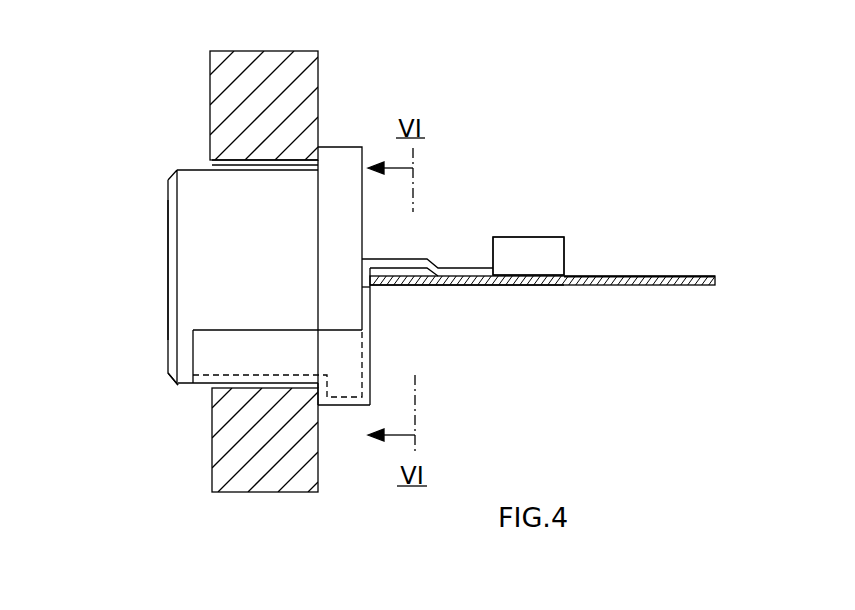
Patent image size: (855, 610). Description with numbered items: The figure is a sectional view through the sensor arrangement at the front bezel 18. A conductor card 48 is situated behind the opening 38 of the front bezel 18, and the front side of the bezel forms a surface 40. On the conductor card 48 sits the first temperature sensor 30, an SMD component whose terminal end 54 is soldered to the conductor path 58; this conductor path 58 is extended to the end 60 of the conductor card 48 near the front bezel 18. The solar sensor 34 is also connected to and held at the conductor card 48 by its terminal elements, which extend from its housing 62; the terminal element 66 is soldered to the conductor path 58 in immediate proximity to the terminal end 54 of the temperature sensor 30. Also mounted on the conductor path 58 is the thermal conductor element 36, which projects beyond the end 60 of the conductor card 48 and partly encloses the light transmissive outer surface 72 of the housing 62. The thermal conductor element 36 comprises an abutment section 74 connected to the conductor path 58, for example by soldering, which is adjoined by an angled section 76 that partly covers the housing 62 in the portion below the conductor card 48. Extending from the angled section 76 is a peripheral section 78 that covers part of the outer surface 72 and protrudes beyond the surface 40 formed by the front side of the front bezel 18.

The front bezel 18 is at (233, 92).
The surface 40 is at (208, 122).
The opening 38 is at (213, 162).
The housing 62 is at (195, 255).
The solar sensor 34 is at (163, 312).
The light transmissive outer surface 72 is at (192, 400).
The peripheral section 78 is at (303, 357).
The angled section 76 is at (367, 373).
The end 60 is at (380, 298).
The thermal conductor element 36 is at (378, 273).
The terminal element 66 is at (408, 262).
The first temperature sensor 30 is at (550, 226).
The terminal end 54 is at (547, 255).
The conductor path 58 is at (662, 275).
The abutment section 74 is at (417, 287).
The conductor card 48 is at (547, 286).